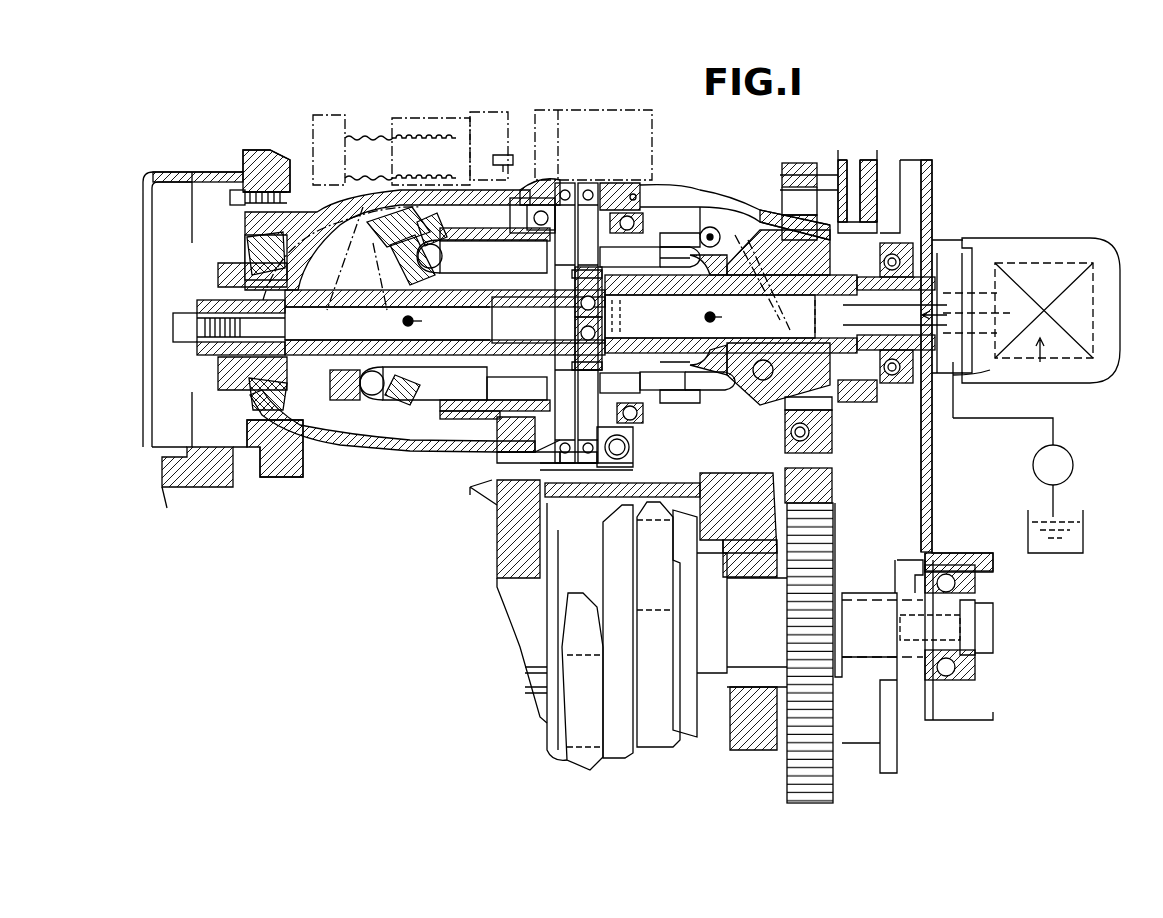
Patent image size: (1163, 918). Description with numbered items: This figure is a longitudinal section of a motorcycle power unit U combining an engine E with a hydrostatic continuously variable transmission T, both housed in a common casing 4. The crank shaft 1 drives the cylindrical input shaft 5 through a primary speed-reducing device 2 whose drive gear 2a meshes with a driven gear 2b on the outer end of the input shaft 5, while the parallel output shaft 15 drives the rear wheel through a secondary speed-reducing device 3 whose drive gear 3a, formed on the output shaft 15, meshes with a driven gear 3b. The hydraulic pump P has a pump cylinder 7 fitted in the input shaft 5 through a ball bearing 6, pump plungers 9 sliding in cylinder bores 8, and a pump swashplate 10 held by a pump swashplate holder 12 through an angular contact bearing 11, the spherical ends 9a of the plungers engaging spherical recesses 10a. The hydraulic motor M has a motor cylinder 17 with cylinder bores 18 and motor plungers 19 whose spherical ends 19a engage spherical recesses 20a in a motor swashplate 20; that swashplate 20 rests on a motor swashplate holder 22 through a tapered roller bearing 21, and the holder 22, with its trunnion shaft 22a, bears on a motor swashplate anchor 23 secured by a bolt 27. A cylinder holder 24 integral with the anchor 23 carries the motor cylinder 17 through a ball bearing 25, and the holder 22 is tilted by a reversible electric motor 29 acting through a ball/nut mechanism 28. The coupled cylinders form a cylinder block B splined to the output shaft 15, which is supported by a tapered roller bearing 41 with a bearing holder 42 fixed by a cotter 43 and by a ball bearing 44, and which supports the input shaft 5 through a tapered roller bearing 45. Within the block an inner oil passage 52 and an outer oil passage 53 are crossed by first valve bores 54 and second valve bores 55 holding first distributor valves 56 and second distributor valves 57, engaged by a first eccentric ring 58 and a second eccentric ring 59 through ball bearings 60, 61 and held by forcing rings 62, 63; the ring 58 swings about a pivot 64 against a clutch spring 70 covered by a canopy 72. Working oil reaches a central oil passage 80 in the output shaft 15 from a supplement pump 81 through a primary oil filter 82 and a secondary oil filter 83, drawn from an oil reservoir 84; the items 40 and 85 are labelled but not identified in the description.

The crank shaft 1 is at (510, 633).
The primary speed-reducing device 2 is at (842, 468).
The drive gear 2a is at (832, 487).
The driven gear 2b is at (800, 163).
The secondary speed-reducing device 3 is at (877, 150).
The drive gear 3a is at (860, 402).
The driven gear 3b is at (855, 160).
The casing 4 is at (205, 488).
The cylindrical input shaft 5 is at (700, 208).
The ball bearing 6 is at (652, 223).
The pump cylinder 7 is at (650, 425).
The cylinder bores 8 is at (680, 317).
The pump plungers 9 is at (651, 318).
The spherical end 9a is at (691, 319).
The pump swashplate 10 is at (710, 315).
The spherical recess 10a is at (660, 355).
The angular contact bearing 11 is at (712, 227).
The pump swashplate holder 12 is at (728, 232).
The output shaft 15 is at (756, 280).
The motor cylinder 17 is at (462, 420).
The cylinder bores 18 is at (422, 405).
The motor plungers 19 is at (453, 320).
The spherical end 19a is at (419, 319).
The motor swashplate 20 is at (405, 262).
The spherical recess 20a is at (440, 318).
The tapered roller bearing 21 is at (433, 223).
The motor swashplate holder 22 is at (375, 205).
The trunnion shaft 22a is at (341, 258).
The motor swashplate anchor 23 is at (300, 215).
The cylinder holder 24 is at (500, 190).
The ball bearing 25 is at (528, 200).
The bolt 27 is at (228, 198).
The ball/nut mechanism 28 is at (432, 112).
The reversible electric motor 29 is at (590, 112).
The main shaft 40 is at (465, 345).
The tapered roller bearing 41 is at (250, 243).
The bearing holder 42 is at (220, 270).
The cotter 43 is at (190, 290).
The ball bearing 44 is at (898, 228).
The tapered roller bearing 45 is at (800, 262).
The annular inner oil passage 52 is at (573, 293).
The annular outer oil passage 53 is at (580, 360).
The first valve bores 54 is at (628, 175).
The second valve bores 55 is at (543, 178).
The first distributor valves 56 is at (620, 382).
The second distributor valves 57 is at (517, 386).
The first eccentric ring 58 is at (595, 180).
The second eccentric ring 59 is at (560, 180).
The ball bearings 60 is at (586, 476).
The ball bearings 61 is at (540, 460).
The first forcing ring 62 is at (574, 478).
The second forcing ring 63 is at (515, 457).
The pivot 64 is at (637, 197).
The clutch spring 70 is at (630, 447).
The canopy 72 is at (622, 481).
The central oil passage 80 is at (528, 327).
The supplement pump 81 is at (1073, 465).
The primary oil filter 82 is at (1022, 240).
The secondary oil filter 83 is at (790, 328).
The oil reservoir 84 is at (1083, 535).
The passage 85 is at (629, 317).